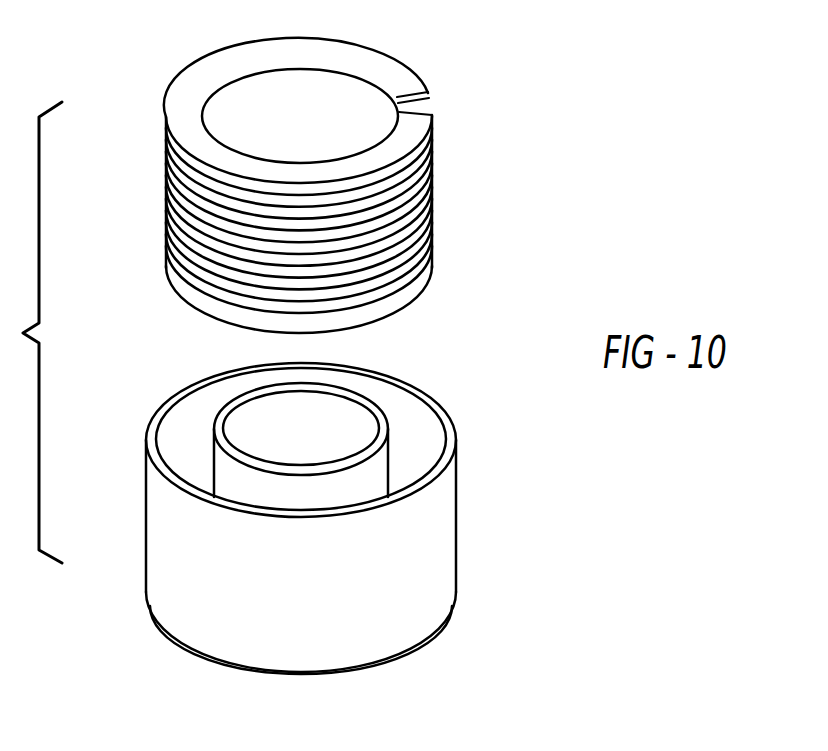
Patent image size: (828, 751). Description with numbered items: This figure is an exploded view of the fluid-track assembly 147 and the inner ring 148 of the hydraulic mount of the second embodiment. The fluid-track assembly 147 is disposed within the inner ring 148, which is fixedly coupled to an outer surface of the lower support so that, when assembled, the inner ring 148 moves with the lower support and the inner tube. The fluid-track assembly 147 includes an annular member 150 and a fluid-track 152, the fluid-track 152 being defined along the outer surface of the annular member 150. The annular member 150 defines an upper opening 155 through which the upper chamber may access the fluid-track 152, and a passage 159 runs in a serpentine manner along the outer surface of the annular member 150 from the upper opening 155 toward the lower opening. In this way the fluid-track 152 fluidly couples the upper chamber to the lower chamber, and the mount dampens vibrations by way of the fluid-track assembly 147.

The fluid-track assembly 147 is at (174, 68).
The inner ring 148 is at (456, 533).
The annular member 150 is at (412, 305).
The fluid-track 152 is at (158, 262).
The upper opening 155 is at (430, 100).
The passage 159 is at (433, 182).